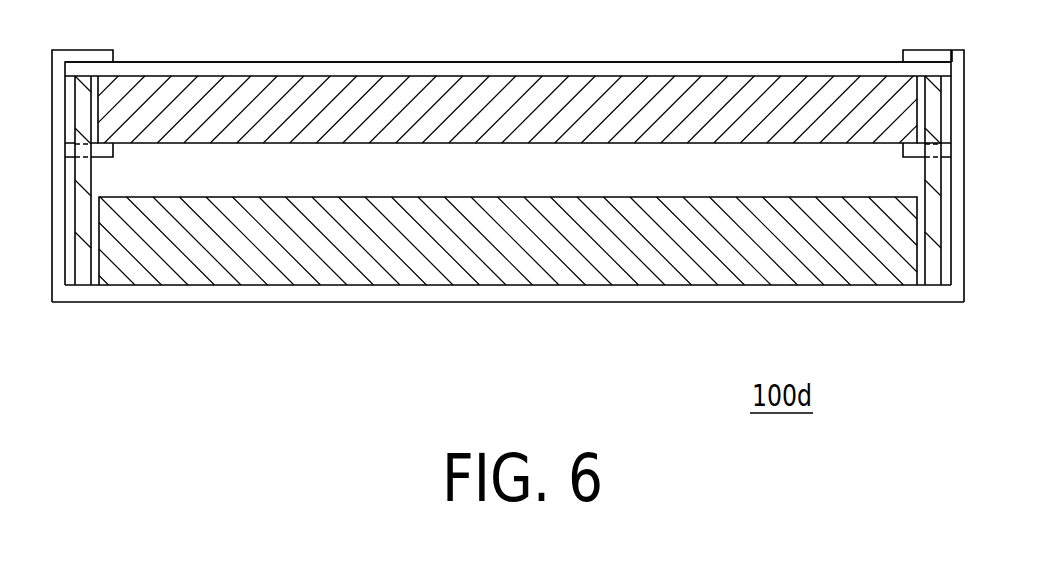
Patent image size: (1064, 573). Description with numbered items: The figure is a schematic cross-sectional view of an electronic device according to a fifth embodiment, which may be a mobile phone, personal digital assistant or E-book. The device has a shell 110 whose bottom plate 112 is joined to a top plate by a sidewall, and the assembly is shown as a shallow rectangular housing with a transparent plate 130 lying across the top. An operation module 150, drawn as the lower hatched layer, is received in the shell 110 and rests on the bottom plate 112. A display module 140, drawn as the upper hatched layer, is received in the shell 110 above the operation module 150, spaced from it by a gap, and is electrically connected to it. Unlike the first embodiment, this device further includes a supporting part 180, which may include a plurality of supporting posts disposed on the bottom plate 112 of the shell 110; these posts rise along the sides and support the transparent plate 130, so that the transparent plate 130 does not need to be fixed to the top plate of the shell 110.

The shell 110 is at (958, 213).
The bottom plate 112 is at (310, 290).
The transparent plate 130 is at (253, 64).
The display module 140 is at (480, 104).
The operation module 150 is at (489, 272).
The supporting part 180 is at (938, 173).